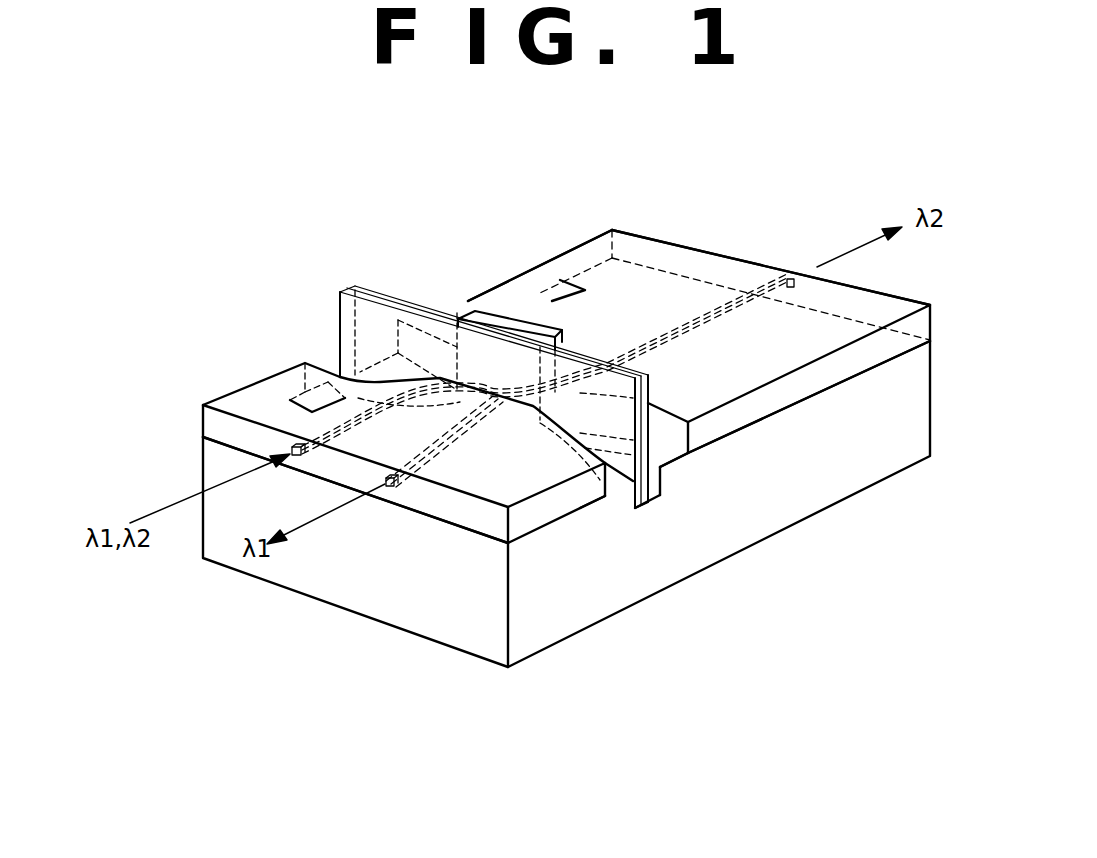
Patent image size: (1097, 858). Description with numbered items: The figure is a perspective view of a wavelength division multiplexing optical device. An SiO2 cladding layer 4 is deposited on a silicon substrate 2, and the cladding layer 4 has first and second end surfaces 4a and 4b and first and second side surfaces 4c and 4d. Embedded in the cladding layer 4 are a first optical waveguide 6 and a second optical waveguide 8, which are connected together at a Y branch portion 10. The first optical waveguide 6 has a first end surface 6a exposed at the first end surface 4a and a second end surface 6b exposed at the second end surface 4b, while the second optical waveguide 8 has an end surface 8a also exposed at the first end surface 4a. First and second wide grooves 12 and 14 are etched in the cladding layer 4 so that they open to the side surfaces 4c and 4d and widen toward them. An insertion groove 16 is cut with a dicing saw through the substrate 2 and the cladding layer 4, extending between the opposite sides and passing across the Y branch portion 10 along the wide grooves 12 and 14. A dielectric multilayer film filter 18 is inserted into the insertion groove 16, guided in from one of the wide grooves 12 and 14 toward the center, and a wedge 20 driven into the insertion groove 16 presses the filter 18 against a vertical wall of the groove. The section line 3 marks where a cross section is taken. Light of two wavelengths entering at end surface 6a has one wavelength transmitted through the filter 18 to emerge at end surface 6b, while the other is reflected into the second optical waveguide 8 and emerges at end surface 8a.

The silicon substrate 2 is at (594, 612).
The section line 3— 3 is at (238, 388).
The cladding layer 4 is at (632, 242).
The first end surface of cladding layer 4a is at (445, 512).
The second end surface of cladding layer 4b is at (707, 263).
The first side surface of cladding layer 4c is at (792, 393).
The second side surface of cladding layer 4d is at (573, 261).
The first optical waveguide 6 is at (362, 413).
The first end surface of first optical waveguide 6a is at (291, 450).
The second end surface of first optical waveguide 6b is at (790, 279).
The second optical waveguide 8 is at (453, 447).
The end surface of second optical waveguide 8a is at (391, 487).
The Y branch portion 10 is at (498, 412).
The first wide groove 12 is at (664, 458).
The second wide groove 14 is at (323, 380).
The insertion groove 16 is at (661, 490).
The dielectric multilayer film filter 18 is at (365, 288).
The wedge 20 is at (488, 313).